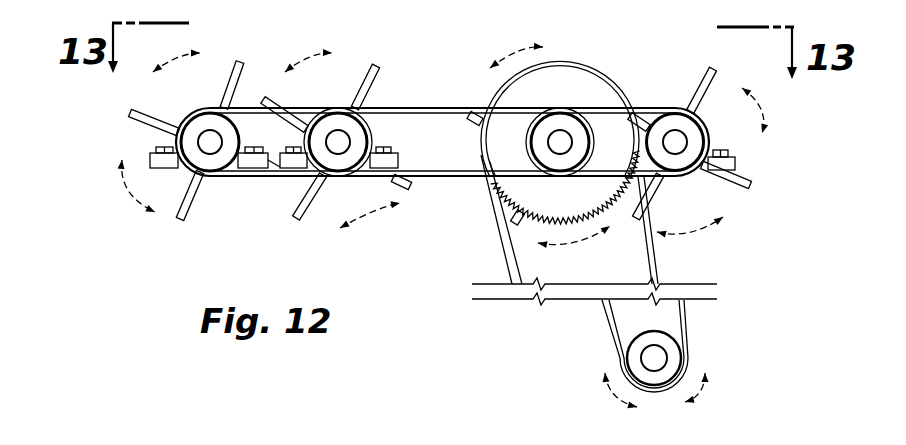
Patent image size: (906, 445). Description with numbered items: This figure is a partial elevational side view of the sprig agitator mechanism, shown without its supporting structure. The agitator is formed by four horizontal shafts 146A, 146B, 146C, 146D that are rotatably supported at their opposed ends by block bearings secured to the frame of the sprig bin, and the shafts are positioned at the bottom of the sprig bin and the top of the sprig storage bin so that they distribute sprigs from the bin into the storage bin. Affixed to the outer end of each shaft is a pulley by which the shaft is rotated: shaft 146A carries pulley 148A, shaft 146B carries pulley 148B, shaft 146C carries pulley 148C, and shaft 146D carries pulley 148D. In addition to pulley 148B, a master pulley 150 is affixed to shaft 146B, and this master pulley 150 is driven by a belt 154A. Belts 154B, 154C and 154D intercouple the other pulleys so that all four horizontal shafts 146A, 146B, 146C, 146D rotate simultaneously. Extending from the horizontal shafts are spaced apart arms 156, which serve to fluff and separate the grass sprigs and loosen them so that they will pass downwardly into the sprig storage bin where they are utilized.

The horizontal shaft 146A is at (676, 147).
The horizontal shaft 146B is at (566, 137).
The horizontal shaft 146C is at (338, 134).
The horizontal shaft 146D is at (208, 143).
The pulley 148A is at (697, 138).
The pulley 148B is at (544, 158).
The pulley 148C is at (336, 165).
The pulley 148D is at (212, 162).
The master pulley 150 is at (564, 82).
The belt 154A is at (653, 257).
The belt 154B is at (614, 179).
The belt 154C is at (461, 178).
The belt 154D is at (265, 178).
The arms 156 is at (240, 62).